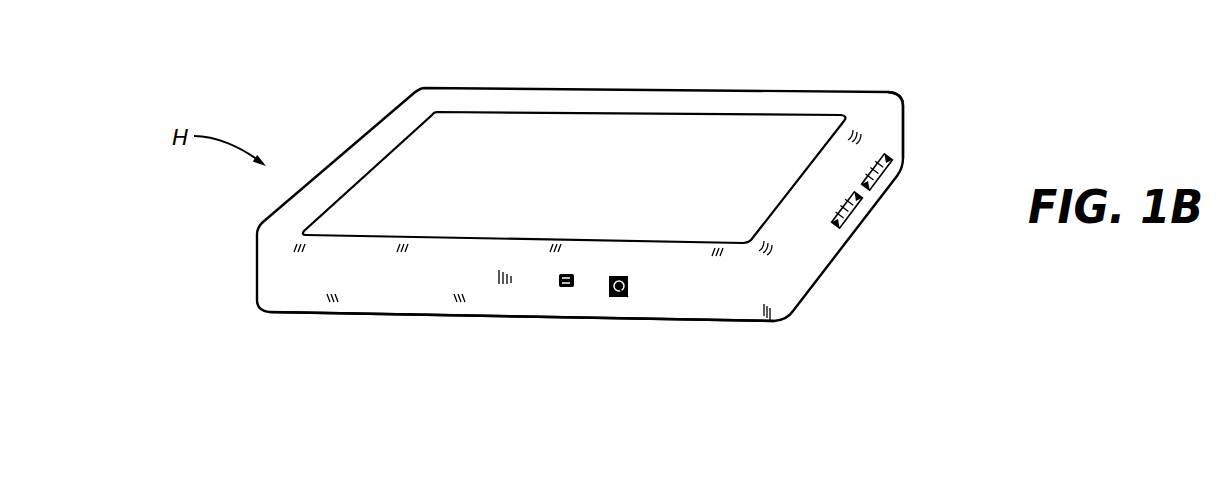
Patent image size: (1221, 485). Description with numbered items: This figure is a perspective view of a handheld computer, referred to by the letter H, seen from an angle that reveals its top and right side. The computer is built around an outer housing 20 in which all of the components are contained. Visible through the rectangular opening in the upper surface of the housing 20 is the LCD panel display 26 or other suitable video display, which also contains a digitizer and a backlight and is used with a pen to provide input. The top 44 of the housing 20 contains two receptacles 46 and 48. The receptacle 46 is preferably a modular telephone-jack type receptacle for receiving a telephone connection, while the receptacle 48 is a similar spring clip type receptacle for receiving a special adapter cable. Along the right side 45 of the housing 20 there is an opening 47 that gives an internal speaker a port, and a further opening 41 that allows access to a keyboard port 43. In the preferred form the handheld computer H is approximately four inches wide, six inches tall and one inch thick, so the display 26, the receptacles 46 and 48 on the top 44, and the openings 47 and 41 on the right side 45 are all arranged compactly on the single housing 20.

The outer housing 20 is at (365, 320).
The LCD panel display 26 is at (602, 188).
The opening 41 is at (617, 276).
The keyboard port 43 is at (629, 297).
The top 44 is at (905, 123).
The right side 45 is at (682, 292).
The receptacle 46 is at (889, 164).
The opening 47 is at (550, 288).
The receptacle 48 is at (847, 228).